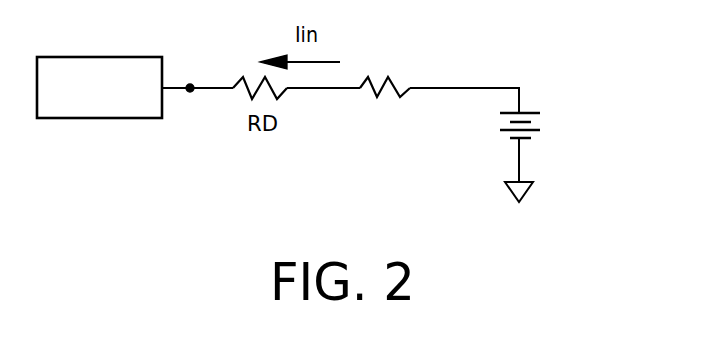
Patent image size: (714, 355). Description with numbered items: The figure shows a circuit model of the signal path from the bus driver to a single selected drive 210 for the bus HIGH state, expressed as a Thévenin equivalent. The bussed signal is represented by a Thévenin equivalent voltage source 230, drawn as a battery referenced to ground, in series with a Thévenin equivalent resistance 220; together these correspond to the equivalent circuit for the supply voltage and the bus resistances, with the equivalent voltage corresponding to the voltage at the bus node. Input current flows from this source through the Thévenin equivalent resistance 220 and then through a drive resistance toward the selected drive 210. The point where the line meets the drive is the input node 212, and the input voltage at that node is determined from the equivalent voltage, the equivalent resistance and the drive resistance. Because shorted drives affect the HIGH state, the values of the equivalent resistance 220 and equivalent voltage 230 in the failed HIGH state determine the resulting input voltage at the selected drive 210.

The selected drive 210 is at (133, 57).
The input node 212 is at (197, 75).
The Thévenin equivalent resistance RTH 220 is at (384, 72).
The Thévenin equivalent voltage VTH 230 is at (543, 129).